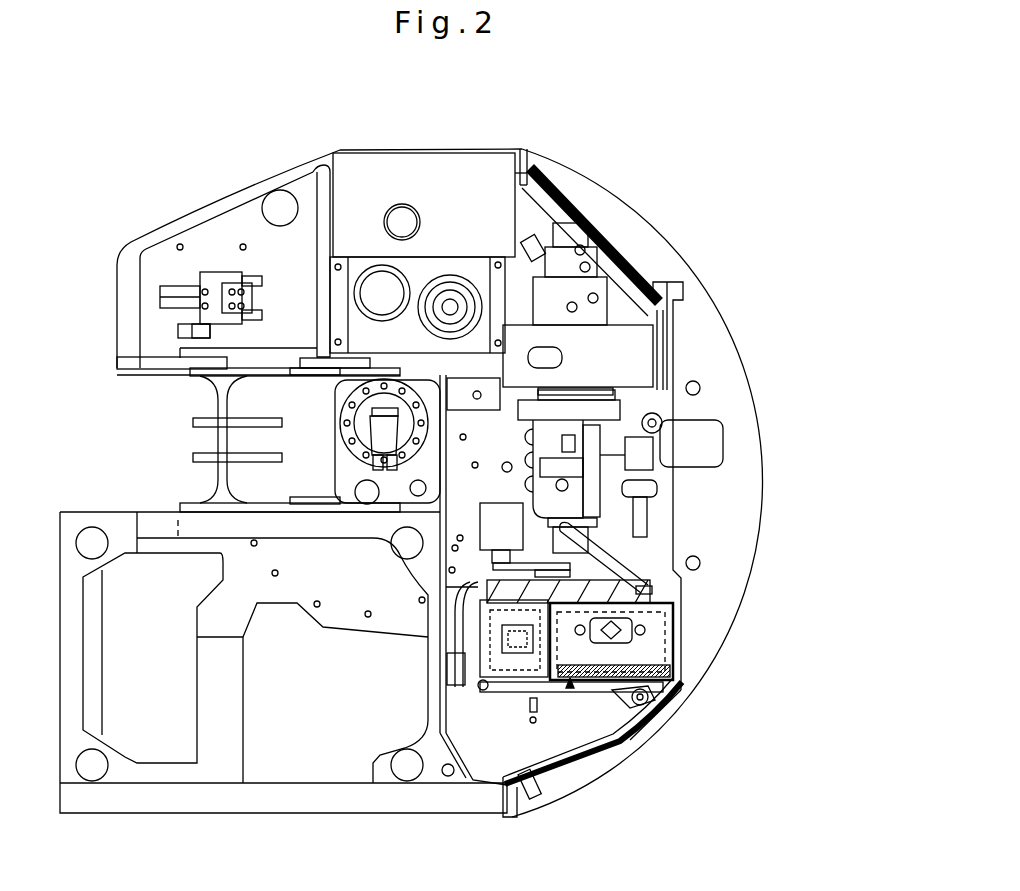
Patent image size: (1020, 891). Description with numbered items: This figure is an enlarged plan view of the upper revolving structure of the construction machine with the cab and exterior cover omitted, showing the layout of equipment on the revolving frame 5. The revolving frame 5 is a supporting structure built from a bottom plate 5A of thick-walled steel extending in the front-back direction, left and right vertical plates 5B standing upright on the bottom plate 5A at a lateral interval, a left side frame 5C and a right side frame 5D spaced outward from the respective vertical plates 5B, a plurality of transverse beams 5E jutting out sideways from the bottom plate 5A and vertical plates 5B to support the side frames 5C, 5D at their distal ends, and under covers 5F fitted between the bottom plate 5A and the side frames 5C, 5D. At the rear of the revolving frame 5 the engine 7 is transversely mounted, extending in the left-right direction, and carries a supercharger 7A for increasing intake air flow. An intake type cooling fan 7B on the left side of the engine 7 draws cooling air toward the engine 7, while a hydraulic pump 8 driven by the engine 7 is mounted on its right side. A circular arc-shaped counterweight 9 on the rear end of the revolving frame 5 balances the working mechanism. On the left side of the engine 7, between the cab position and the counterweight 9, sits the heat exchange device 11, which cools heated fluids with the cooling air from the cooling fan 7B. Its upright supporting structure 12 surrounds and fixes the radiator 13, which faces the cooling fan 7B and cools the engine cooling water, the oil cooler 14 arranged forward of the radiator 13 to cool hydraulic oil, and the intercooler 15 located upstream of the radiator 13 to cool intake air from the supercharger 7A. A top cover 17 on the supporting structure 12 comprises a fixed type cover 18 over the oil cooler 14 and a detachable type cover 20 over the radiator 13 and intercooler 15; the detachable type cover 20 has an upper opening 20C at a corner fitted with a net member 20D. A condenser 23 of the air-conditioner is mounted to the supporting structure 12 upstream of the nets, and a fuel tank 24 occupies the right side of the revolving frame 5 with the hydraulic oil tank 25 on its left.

The revolving frame 5 is at (283, 805).
The bottom plate 5A is at (347, 613).
The vertical plates 5B is at (263, 374).
The left side frame 5C is at (404, 800).
The right side frame 5D is at (250, 177).
The transverse beams 5E is at (327, 217).
The under covers 5F is at (193, 233).
The engine 7 is at (658, 513).
The supercharger 7A is at (653, 490).
The cooling fan 7B is at (642, 562).
The hydraulic pump 8 is at (583, 290).
The counterweight 9 is at (707, 380).
The heat exchange device 11 is at (690, 630).
The supporting structure 12 is at (648, 645).
The radiator 13 is at (640, 610).
The oil cooler 14 is at (490, 690).
The intercooler 15 is at (690, 697).
The top cover 17 is at (574, 690).
The fixed type cover 18 is at (517, 787).
The detachable type cover 20 is at (645, 652).
The upper opening 20C is at (668, 688).
The net member 20D is at (529, 784).
The condenser 23 is at (570, 684).
The fuel tank 24 is at (373, 180).
The hydraulic oil tank 25 is at (457, 263).